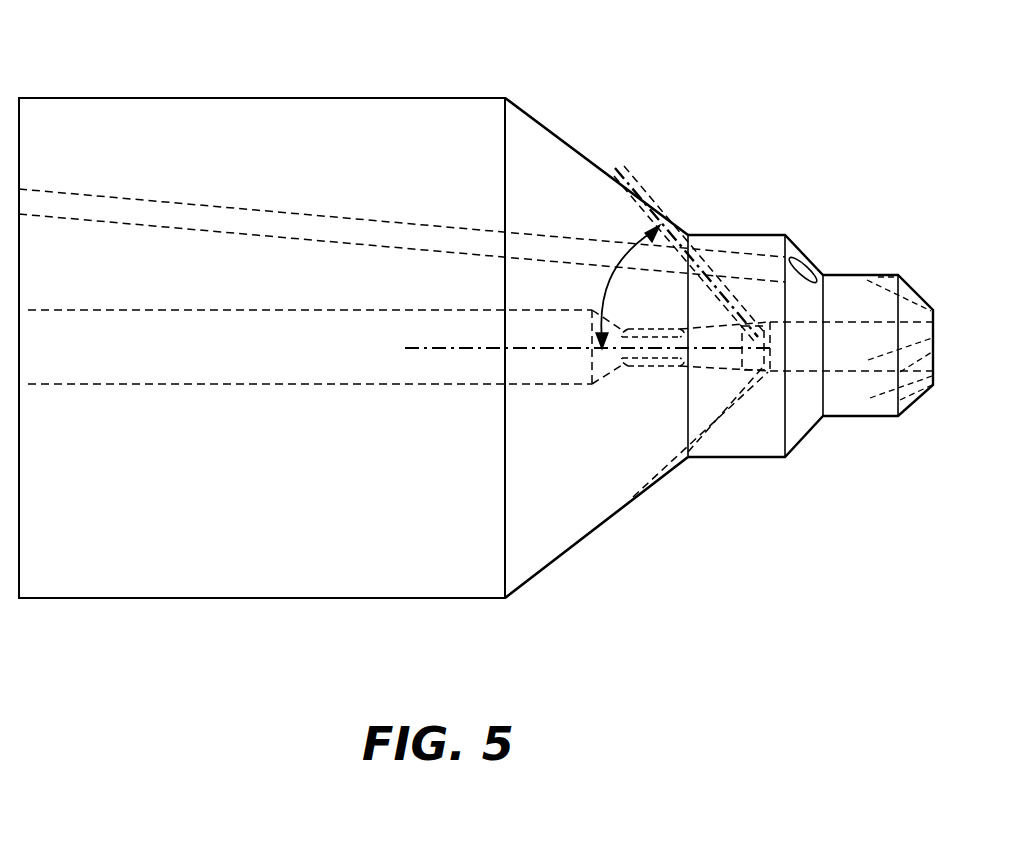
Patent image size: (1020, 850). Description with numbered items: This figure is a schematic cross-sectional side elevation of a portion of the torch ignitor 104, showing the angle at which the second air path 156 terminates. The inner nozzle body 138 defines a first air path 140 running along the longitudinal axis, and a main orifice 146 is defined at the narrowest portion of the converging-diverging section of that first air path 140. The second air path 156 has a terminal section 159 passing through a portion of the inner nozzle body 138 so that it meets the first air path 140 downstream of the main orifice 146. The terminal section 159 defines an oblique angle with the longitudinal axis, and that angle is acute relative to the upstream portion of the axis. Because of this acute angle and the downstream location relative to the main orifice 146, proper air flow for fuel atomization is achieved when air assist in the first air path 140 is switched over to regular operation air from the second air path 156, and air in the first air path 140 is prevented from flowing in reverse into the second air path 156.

The torch ignitor 104 is at (303, 72).
The inner nozzle body 138 is at (420, 497).
The first air path 140 is at (205, 358).
The main orifice 146 is at (626, 368).
The second air path 156 is at (711, 252).
The terminal section 159 is at (698, 267).